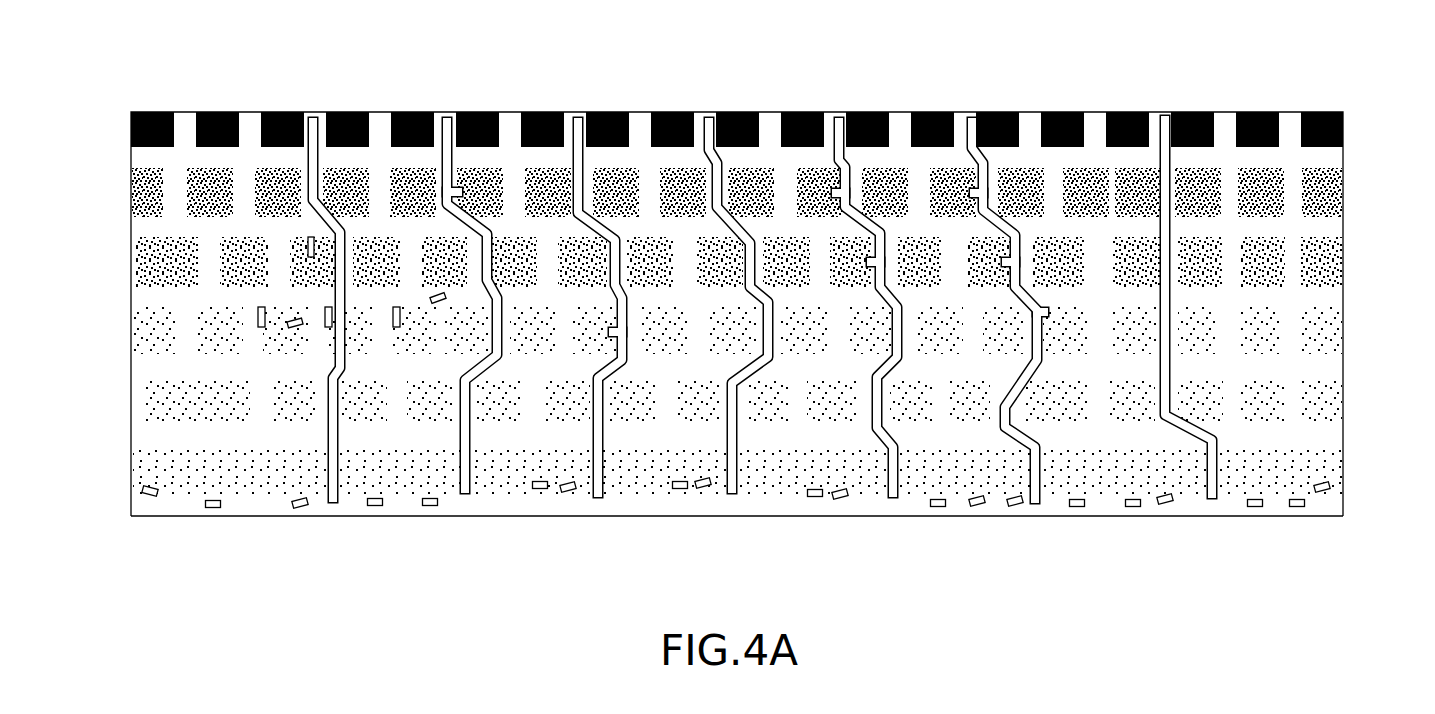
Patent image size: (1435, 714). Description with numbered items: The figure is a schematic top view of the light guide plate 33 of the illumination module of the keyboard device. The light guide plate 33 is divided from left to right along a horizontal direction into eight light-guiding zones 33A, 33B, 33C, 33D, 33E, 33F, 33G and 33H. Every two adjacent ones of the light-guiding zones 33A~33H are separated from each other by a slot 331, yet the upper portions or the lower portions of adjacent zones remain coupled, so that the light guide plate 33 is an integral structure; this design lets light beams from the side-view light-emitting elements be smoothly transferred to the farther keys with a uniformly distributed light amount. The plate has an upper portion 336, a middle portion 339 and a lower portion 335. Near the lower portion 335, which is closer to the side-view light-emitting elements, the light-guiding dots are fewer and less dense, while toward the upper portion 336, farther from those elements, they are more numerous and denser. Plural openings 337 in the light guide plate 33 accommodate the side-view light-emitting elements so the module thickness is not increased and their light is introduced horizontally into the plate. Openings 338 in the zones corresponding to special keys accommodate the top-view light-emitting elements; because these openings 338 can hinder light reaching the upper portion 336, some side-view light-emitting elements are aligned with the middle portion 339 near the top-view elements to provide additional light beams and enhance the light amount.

The light guide plate 33 is at (1082, 65).
The slot 331 is at (320, 120).
The lower portion 335 is at (1347, 375).
The upper portion 336 is at (1347, 117).
The opening 337 is at (143, 490).
The opening 338 is at (310, 235).
The middle portion 339 is at (1347, 243).
The light-guiding zone 33A is at (262, 470).
The light-guiding zone 33B is at (405, 468).
The light-guiding zone 33C is at (533, 435).
The light-guiding zone 33D is at (677, 437).
The light-guiding zone 33E is at (815, 437).
The light-guiding zone 33F is at (963, 437).
The light-guiding zone 33G is at (1100, 437).
The light-guiding zone 33H is at (1292, 437).